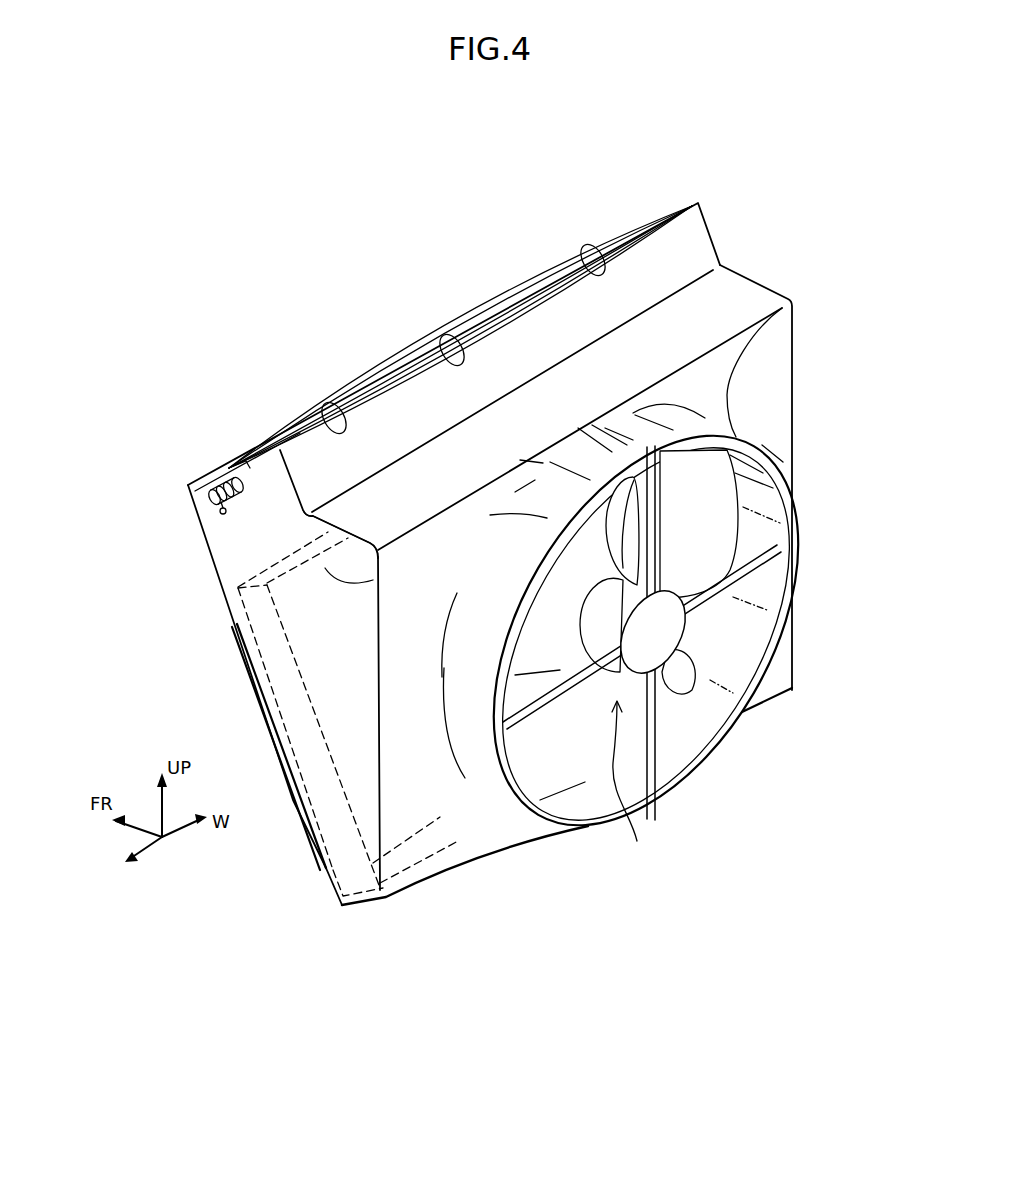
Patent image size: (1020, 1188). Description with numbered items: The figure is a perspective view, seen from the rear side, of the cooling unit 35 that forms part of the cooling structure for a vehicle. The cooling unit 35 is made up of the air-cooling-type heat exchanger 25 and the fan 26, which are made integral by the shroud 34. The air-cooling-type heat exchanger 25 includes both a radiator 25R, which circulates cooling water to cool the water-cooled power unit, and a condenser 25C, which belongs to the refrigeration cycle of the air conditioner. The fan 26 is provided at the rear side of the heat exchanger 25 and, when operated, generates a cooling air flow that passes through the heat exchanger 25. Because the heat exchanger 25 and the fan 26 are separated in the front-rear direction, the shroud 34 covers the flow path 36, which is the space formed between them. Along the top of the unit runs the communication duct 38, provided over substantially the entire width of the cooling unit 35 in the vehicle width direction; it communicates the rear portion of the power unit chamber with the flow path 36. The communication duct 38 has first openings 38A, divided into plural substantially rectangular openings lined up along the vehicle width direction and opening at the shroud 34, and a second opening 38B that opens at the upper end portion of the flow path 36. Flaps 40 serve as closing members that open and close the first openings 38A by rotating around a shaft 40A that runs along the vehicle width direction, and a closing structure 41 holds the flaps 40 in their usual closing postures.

The air-cooling-type heat exchanger 25 is at (363, 975).
The condenser 25C is at (330, 844).
The radiator 25R is at (330, 866).
The fan 26 is at (629, 783).
The shroud 34 is at (772, 290).
The cooling unit 35 is at (700, 137).
The flow path 36 is at (716, 517).
The communication duct 38 is at (715, 242).
The first openings 38A is at (582, 257).
The second opening 38B is at (378, 571).
The flaps 40 is at (487, 306).
The shaft 40A is at (232, 476).
The closing structure 41 is at (200, 499).